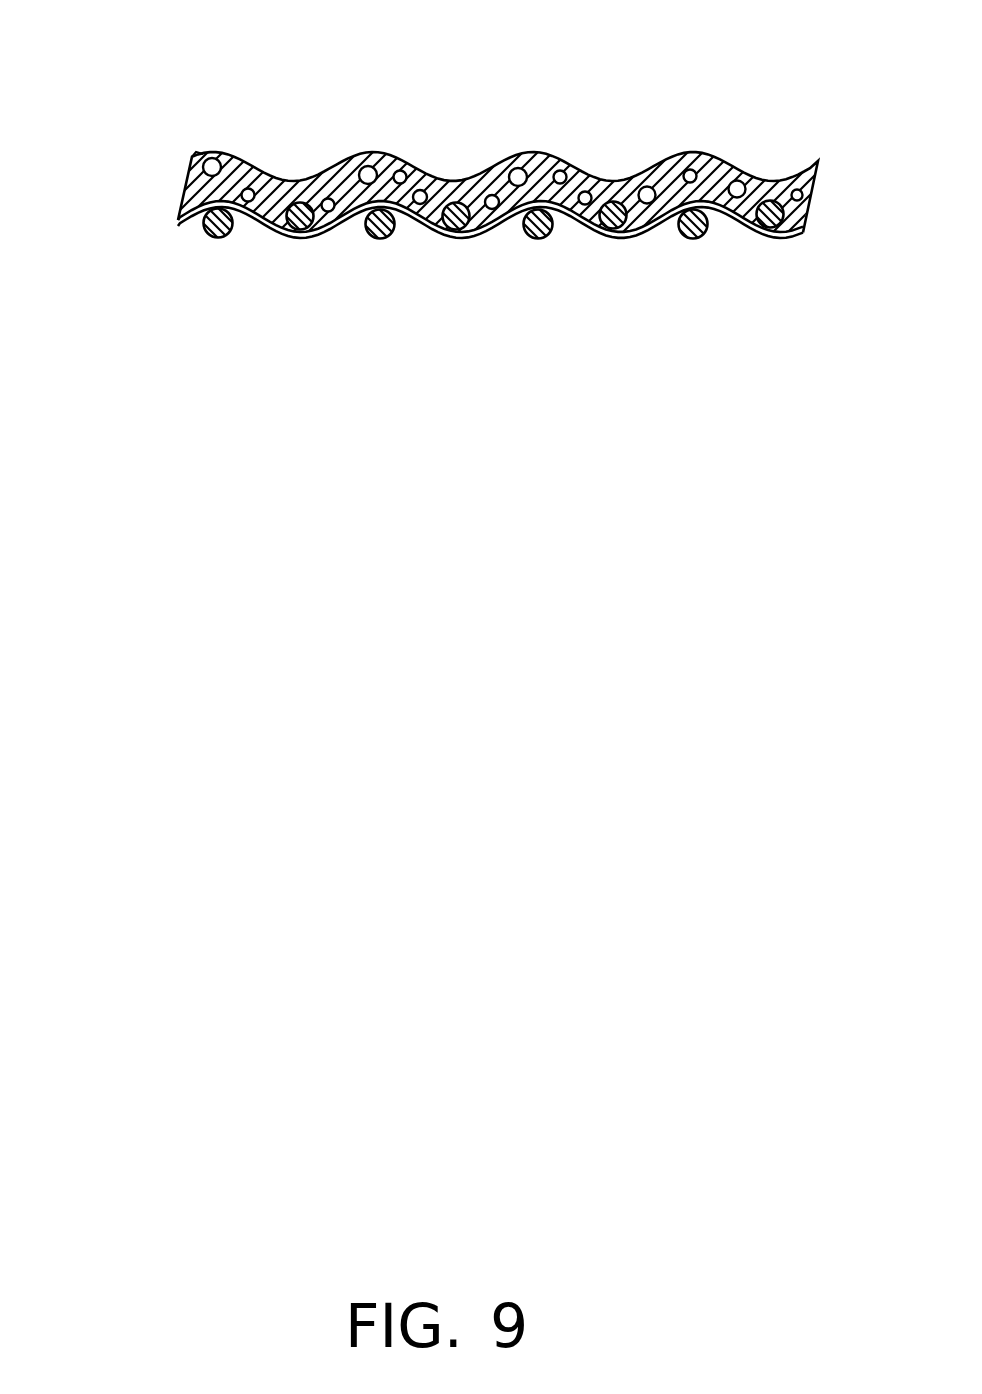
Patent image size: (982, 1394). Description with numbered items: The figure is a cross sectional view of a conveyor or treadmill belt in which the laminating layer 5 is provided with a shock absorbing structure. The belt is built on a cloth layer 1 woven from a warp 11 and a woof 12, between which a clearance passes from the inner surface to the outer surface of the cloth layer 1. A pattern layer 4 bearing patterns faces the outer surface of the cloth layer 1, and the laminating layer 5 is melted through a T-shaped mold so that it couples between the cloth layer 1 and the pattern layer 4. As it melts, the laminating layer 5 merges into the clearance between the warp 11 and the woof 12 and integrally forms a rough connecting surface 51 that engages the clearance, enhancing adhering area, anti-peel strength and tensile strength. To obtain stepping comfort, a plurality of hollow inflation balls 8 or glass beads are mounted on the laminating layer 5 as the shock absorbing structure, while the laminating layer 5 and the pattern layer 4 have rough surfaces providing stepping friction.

The cloth layer 1 is at (177, 219).
The pattern layer 4 is at (291, 181).
The laminating layer 5 is at (574, 183).
The connecting surface 51 is at (428, 216).
The hollow inflation balls 8 is at (645, 190).
The warp 11 is at (372, 228).
The woof 12 is at (484, 231).